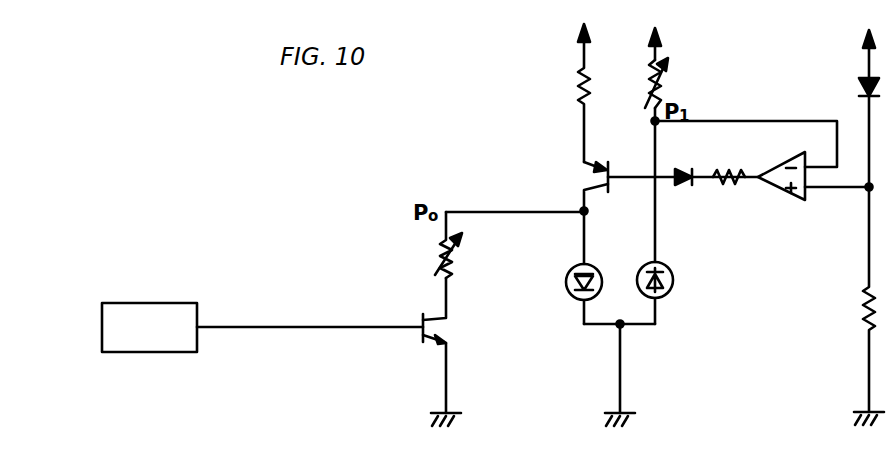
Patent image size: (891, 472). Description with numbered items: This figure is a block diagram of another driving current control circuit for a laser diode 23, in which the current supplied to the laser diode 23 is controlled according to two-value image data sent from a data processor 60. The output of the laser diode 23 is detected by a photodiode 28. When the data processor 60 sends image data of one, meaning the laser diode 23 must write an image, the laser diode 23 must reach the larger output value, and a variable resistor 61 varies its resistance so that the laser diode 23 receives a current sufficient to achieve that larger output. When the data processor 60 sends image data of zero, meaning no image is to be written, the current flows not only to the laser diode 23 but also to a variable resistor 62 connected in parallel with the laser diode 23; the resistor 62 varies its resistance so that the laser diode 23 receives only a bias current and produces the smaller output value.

The data processor 60 is at (181, 303).
The variable resistor 61 is at (652, 80).
The variable resistor 62 is at (452, 258).
The laser diode 23 is at (568, 289).
The photodiode 28 is at (674, 284).